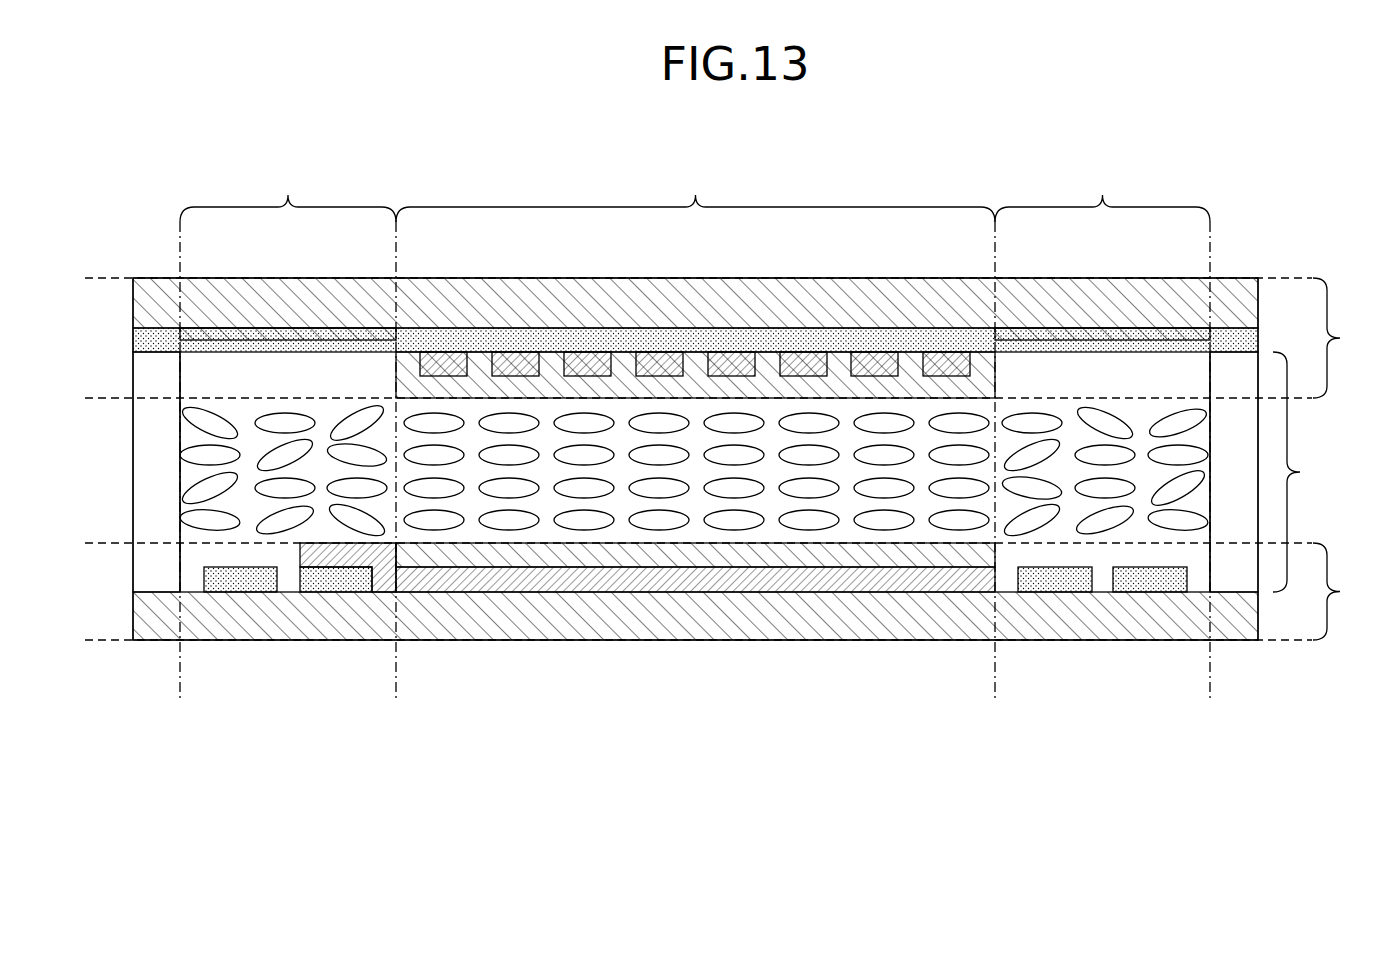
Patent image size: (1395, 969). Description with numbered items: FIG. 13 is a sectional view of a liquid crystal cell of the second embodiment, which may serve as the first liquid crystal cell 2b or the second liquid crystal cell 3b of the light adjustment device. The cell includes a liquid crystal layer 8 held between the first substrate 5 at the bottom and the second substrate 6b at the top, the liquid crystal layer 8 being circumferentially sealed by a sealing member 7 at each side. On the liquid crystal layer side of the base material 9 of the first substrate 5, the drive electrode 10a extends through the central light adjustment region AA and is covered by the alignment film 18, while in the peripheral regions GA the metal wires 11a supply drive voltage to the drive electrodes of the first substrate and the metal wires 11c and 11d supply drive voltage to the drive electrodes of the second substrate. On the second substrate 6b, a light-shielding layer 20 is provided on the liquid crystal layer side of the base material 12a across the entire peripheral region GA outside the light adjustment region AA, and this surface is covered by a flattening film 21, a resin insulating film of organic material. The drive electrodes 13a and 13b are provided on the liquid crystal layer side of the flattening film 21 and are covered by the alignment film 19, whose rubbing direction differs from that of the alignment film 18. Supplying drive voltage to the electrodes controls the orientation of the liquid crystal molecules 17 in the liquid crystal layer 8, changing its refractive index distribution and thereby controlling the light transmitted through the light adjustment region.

The first liquid crystal cell 2b is at (718, 409).
The second liquid crystal cell 3b is at (1261, 170).
The base material 12a is at (152, 306).
The flattening film 21 is at (150, 341).
The light-shielding layer 20 is at (288, 330).
The alignment film 19 is at (696, 386).
The drive electrode 13a is at (876, 370).
The drive electrode 13b is at (948, 370).
The liquid crystal molecules 17 is at (205, 420).
The sealing member 7 is at (157, 505).
The liquid crystal layer 8 is at (1297, 472).
The second substrate 6b is at (1344, 338).
The first substrate 5 is at (1338, 591).
The base material 9 is at (157, 612).
The alignment film 18 is at (665, 560).
The drive electrode 10a is at (930, 580).
The metal wire 11a is at (240, 583).
The metal wire 11c is at (1058, 583).
The metal wire 11d is at (1150, 583).